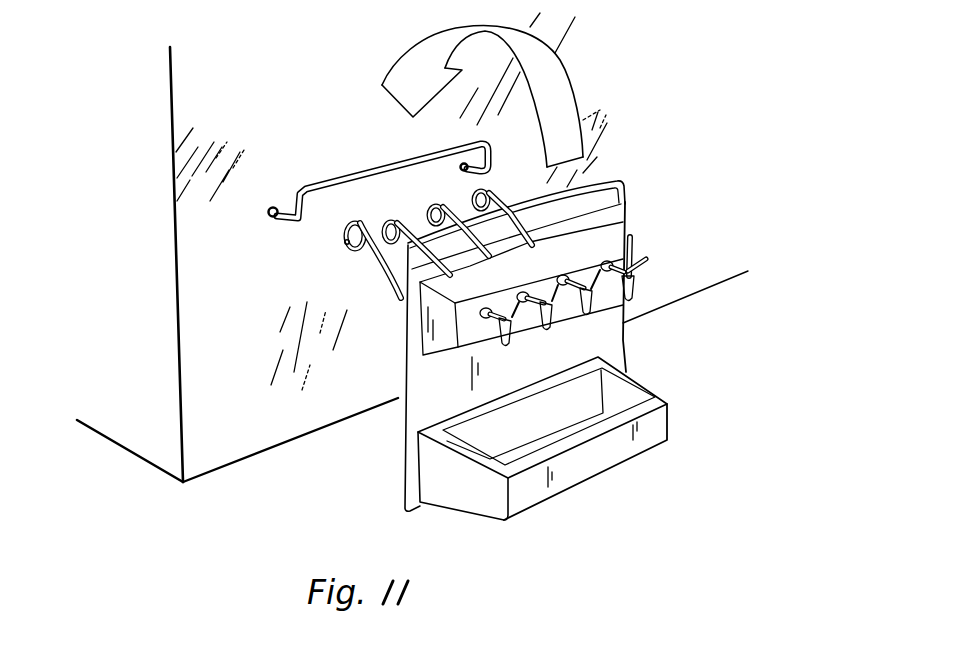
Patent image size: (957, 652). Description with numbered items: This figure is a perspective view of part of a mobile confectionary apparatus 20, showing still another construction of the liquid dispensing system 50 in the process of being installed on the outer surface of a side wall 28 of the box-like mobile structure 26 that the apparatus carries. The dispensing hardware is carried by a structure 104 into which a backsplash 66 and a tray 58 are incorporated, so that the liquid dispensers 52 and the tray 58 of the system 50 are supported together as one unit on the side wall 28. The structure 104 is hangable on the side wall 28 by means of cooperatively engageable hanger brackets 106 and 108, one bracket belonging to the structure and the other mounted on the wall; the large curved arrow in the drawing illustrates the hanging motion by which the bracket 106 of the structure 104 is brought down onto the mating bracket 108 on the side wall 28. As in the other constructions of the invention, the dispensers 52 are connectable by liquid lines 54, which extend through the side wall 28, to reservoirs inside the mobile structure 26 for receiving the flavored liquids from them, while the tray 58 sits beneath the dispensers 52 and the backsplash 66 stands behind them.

The mobile confectionary apparatus 20 is at (138, 150).
The mobile structure 26 is at (110, 447).
The side wall 28 is at (228, 448).
The liquid dispensing system 50 is at (630, 248).
The liquid dispensers 52 is at (514, 306).
The liquid lines 54 is at (355, 224).
The tray 58 is at (667, 399).
The backsplash 66 is at (415, 393).
The structure 104 is at (623, 322).
The hanger bracket 106 is at (607, 182).
The hanger bracket 108 is at (320, 188).